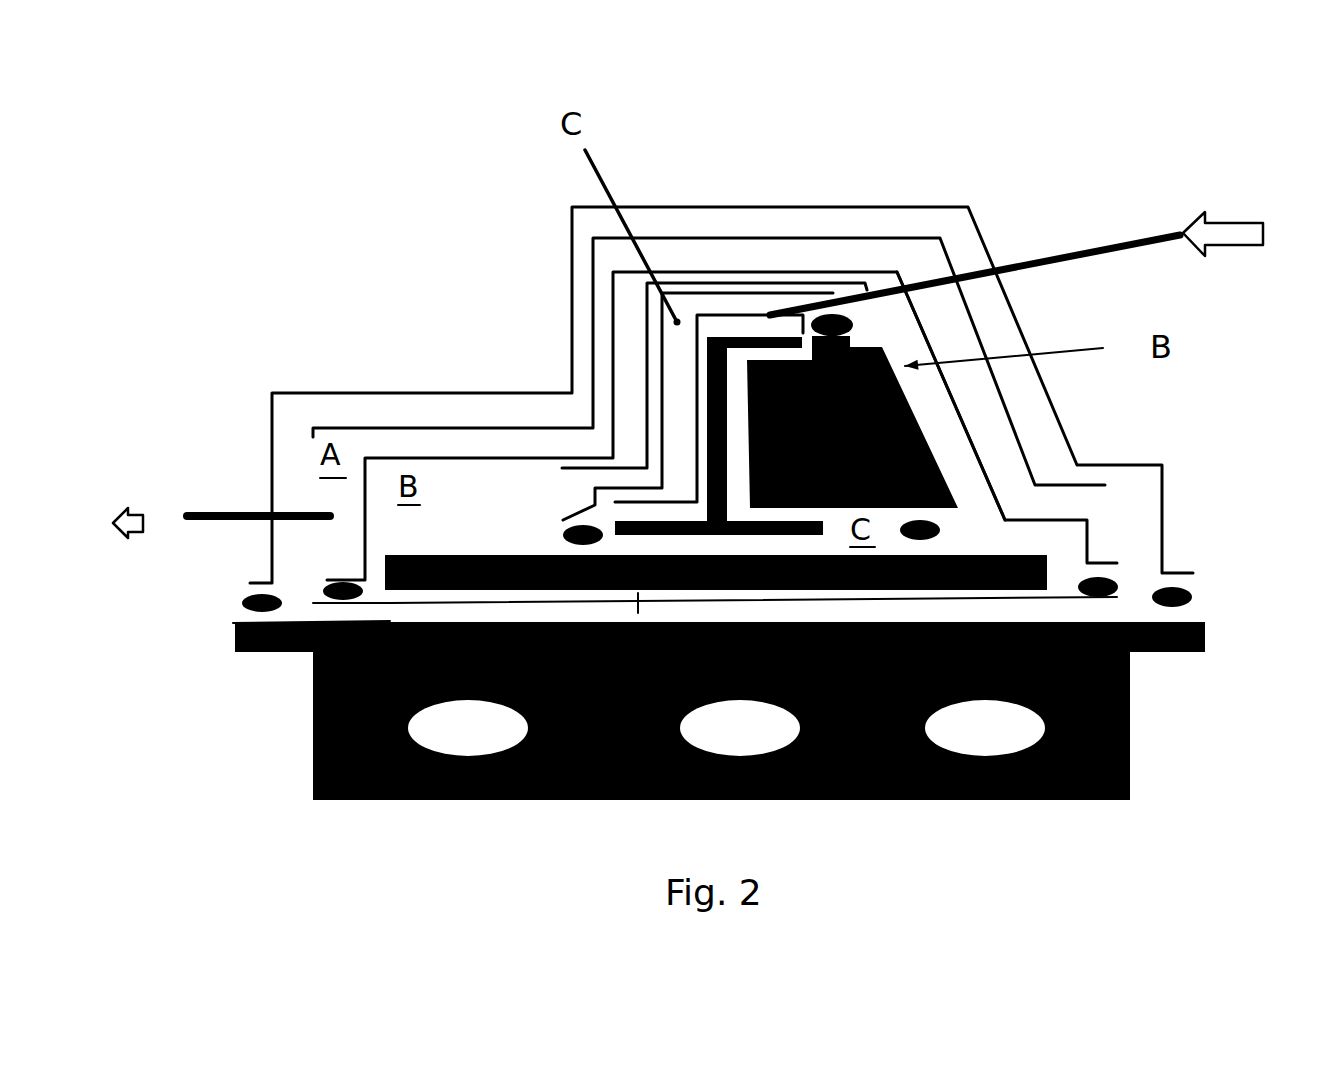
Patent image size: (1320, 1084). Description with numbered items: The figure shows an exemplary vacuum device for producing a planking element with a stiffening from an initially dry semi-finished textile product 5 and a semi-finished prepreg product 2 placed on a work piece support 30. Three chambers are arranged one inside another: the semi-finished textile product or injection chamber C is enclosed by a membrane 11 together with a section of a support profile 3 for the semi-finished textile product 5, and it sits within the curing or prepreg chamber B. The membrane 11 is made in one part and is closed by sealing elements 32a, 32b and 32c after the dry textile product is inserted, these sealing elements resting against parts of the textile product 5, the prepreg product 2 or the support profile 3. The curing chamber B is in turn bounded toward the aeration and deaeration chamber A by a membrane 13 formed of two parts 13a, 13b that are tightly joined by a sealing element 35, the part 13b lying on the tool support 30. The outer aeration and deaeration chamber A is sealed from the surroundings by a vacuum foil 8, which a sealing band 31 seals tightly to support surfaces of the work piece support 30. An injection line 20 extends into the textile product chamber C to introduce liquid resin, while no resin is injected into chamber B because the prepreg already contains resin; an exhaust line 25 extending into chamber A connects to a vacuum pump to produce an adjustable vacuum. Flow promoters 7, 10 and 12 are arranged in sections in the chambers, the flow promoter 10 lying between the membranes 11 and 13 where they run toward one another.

The semi-finished prepreg product 2 is at (695, 382).
The support profile 3 is at (904, 390).
The semi-finished textile product 5 is at (730, 470).
The flow promoter 7 is at (1020, 437).
The vacuum foil 8 is at (877, 203).
The flow promoter 10 is at (714, 283).
The membrane 11 is at (676, 293).
The flow promoter 12 is at (698, 410).
The membrane 13 is at (1047, 518).
The membrane part 13a is at (972, 400).
The membrane part 13b is at (233, 625).
The injection line 20 is at (1140, 233).
The exhaust line 25 is at (200, 523).
The work piece support 30 is at (1213, 632).
The sealing band 31 is at (1195, 594).
The sealing element 32a is at (853, 318).
The sealing element 32b is at (562, 537).
The sealing element 32c is at (940, 530).
The sealing element 35 is at (1112, 582).